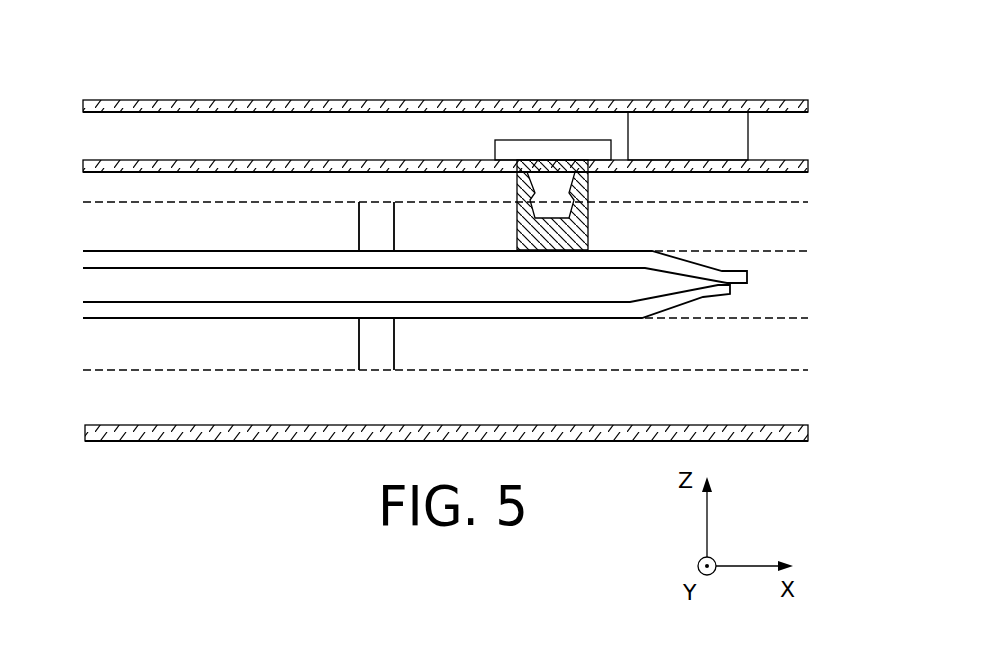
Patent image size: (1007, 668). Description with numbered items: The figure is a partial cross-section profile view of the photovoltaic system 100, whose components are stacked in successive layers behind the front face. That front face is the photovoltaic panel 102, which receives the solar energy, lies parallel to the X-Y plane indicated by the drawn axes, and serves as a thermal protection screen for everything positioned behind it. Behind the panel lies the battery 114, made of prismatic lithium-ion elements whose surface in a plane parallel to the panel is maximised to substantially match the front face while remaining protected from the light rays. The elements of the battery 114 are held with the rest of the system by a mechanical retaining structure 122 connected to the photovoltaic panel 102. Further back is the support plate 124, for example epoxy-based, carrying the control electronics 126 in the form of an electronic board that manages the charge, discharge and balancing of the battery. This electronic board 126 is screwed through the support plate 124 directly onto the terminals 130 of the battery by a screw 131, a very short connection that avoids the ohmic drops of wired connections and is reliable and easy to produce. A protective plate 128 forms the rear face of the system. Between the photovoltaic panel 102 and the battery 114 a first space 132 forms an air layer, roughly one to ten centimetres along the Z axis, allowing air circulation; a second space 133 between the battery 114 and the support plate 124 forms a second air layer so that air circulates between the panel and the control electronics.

The photovoltaic system 100 is at (97, 70).
The photovoltaic panel 102 is at (153, 432).
The battery 114 is at (126, 294).
The mechanical retaining structure 122 is at (368, 240).
The support plate 124 is at (100, 165).
The control electronics 126 is at (688, 127).
The protective plate 128 is at (240, 104).
The terminals 130 is at (572, 229).
The screw 131 is at (505, 151).
The first space 132 is at (785, 394).
The second space 133 is at (787, 186).